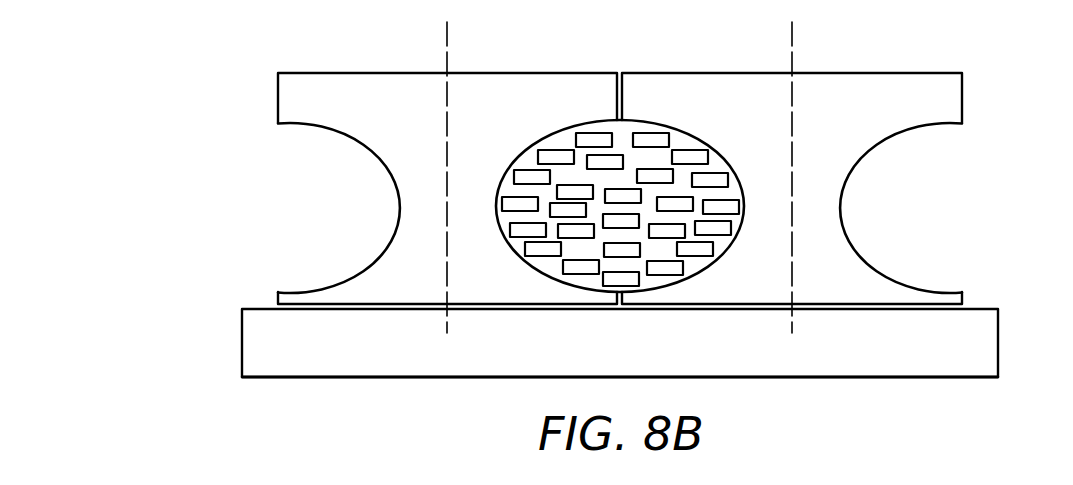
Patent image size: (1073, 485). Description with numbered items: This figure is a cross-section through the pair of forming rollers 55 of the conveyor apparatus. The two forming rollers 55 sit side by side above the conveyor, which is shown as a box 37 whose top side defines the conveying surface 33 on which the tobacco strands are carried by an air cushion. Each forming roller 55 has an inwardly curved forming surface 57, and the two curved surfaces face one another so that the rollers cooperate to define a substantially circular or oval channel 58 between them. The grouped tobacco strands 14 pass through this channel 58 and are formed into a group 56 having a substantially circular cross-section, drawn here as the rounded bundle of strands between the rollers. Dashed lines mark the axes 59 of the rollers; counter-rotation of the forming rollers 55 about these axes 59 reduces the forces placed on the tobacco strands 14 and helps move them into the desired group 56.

The tobacco strands 14 is at (650, 136).
The conveying surface 33 is at (981, 309).
The box 37 is at (958, 369).
The forming rollers 55 is at (284, 96).
The group 56 is at (717, 162).
The forming surface 57 is at (360, 146).
The channel 58 is at (560, 143).
The axes 59 is at (447, 32).